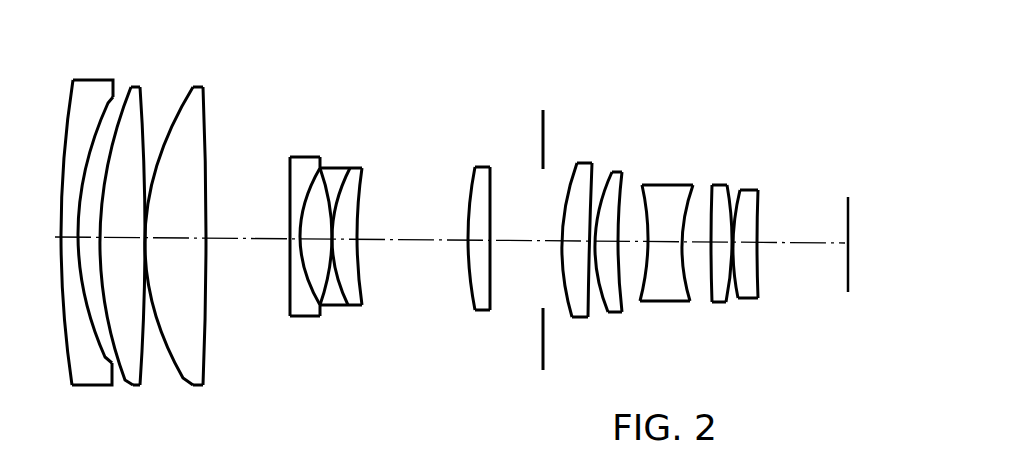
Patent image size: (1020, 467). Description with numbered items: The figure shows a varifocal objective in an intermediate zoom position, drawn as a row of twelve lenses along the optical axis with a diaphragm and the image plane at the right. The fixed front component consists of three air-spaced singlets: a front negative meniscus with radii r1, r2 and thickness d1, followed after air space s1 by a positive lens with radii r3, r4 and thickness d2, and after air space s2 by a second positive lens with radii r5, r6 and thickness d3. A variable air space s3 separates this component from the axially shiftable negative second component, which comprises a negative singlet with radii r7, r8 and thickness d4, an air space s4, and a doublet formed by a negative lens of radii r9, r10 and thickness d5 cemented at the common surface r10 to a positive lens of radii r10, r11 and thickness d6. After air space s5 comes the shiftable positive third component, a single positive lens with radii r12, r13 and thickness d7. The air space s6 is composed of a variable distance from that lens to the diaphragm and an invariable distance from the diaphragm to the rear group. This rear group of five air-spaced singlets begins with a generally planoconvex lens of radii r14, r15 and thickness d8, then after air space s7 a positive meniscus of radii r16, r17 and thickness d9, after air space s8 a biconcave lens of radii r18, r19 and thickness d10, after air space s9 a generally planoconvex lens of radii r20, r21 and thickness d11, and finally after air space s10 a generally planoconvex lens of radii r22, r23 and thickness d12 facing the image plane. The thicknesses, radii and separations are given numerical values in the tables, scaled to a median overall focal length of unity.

The thickness of front lens d1 is at (80, 236).
The thickness of positive lens d2 is at (133, 90).
The thickness of positive lens d3 is at (195, 87).
The thickness of negative singlet d4 is at (295, 238).
The thickness of negative lens d5 is at (347, 238).
The thickness of positive lens d6 is at (357, 238).
The thickness of positive singlet d7 is at (476, 238).
The thickness of planoconvex lens d8 is at (573, 240).
The thickness of positive meniscus d9 is at (610, 240).
The thickness of biconcave lens d10 is at (662, 240).
The thickness of planoconvex lens d11 is at (723, 240).
The thickness of planoconvex lens d12 is at (747, 240).
The air space s1 is at (115, 108).
The air space s2 is at (153, 115).
The air space s3 is at (235, 200).
The air space s4 is at (315, 198).
The air space s5 is at (422, 217).
The air space s6 is at (512, 223).
The air space s7 is at (600, 178).
The air space s8 is at (630, 198).
The air space s9 is at (702, 207).
The air space s10 is at (737, 200).
The radius r1 is at (74, 378).
The radius r2 is at (112, 360).
The radius r3 is at (125, 379).
The radius r4 is at (144, 365).
The radius r5 is at (187, 378).
The radius r6 is at (207, 372).
The radius r7 is at (288, 302).
The radius r8 is at (316, 295).
The radius r9 is at (326, 276).
The radius r10 is at (351, 296).
The radius r11 is at (364, 293).
The radius r12 is at (473, 301).
The radius r13 is at (494, 299).
The radius r14 is at (569, 311).
The radius r15 is at (595, 311).
The radius r16 is at (605, 307).
The radius r17 is at (625, 310).
The radius r18 is at (641, 292).
The radius r19 is at (692, 285).
The radius r20 is at (713, 289).
The radius r21 is at (731, 293).
The radius r22 is at (744, 294).
The radius r23 is at (764, 285).